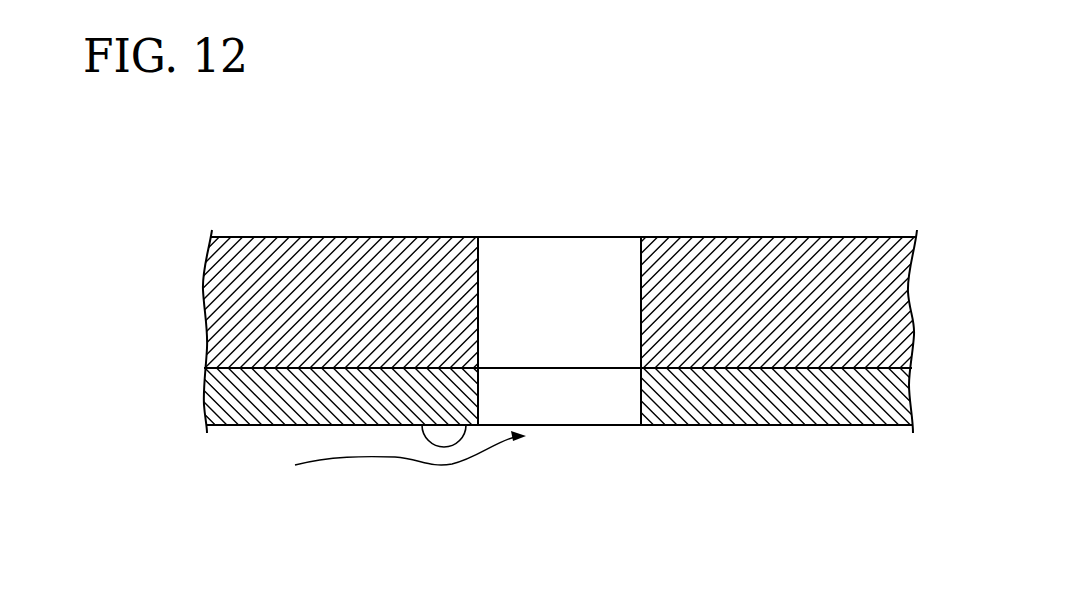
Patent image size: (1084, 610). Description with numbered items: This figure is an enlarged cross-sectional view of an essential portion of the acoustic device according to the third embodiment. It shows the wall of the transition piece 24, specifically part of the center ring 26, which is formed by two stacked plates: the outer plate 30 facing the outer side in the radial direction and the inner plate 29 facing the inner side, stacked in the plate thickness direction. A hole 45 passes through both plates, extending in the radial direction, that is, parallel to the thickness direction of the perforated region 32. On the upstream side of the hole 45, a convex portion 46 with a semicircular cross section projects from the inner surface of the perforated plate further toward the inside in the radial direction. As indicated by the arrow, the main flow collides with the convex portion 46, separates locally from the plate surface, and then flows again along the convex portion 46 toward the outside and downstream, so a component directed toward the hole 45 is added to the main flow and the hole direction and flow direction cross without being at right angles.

The transition piece 24 is at (560, 282).
The center ring 26 is at (560, 319).
The inner plate 29 is at (220, 397).
The outer plate 30 is at (220, 306).
The perforated region 32 is at (446, 488).
The hole 45 is at (641, 270).
The convex portion 46 is at (422, 431).